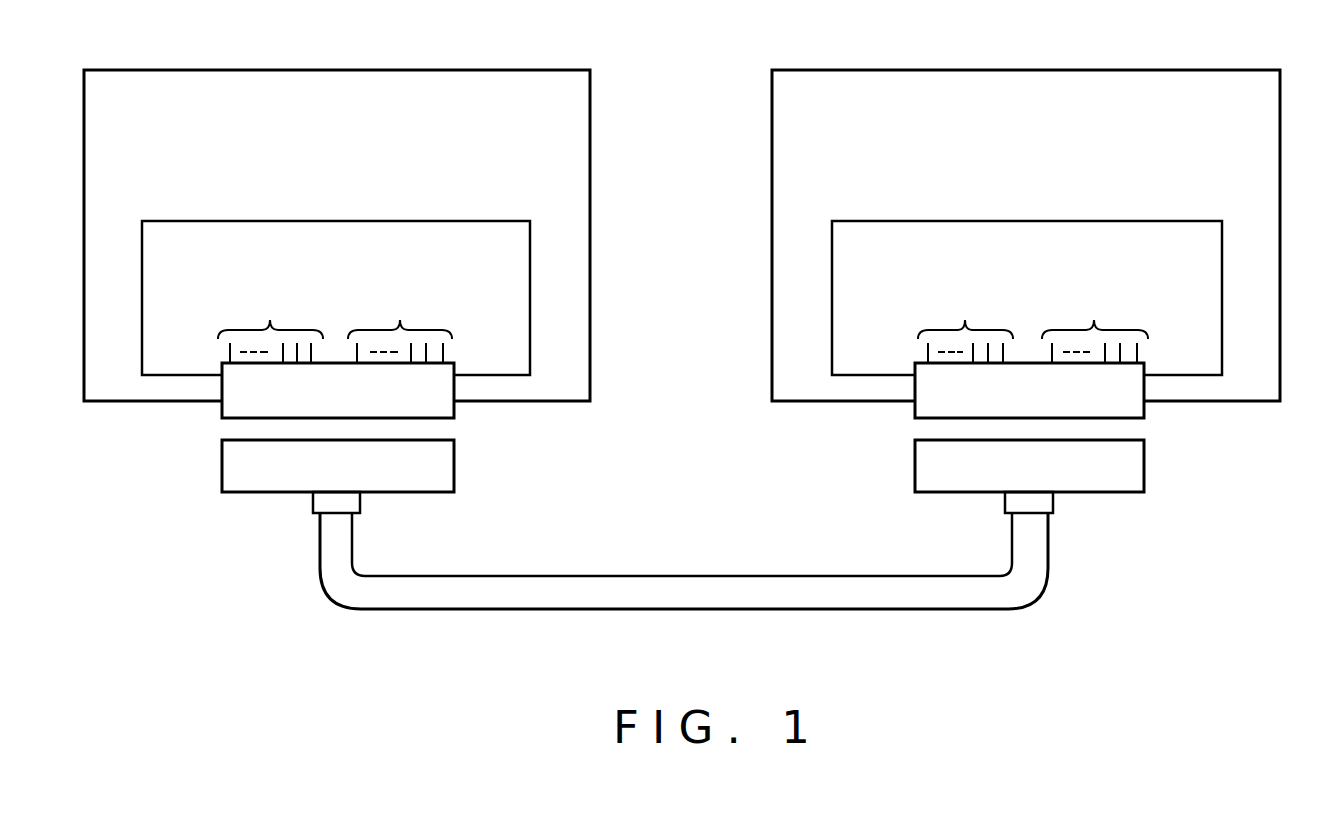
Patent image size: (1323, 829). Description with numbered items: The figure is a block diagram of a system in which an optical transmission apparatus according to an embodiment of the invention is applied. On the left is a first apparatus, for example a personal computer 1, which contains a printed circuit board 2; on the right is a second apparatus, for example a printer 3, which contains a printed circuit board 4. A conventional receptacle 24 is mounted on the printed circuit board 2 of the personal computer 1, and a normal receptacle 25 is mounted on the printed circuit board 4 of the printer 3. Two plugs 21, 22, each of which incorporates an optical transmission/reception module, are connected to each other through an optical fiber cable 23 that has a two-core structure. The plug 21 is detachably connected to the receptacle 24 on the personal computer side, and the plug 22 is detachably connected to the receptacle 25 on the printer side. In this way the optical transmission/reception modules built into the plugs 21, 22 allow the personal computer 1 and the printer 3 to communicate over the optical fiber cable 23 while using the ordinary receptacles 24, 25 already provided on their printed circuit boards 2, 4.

The personal computer 1 is at (226, 70).
The printed circuit board 2 is at (522, 258).
The printer 3 is at (855, 70).
The printed circuit board 4 is at (1215, 253).
The plug 21 is at (457, 468).
The plug 22 is at (1146, 468).
The optical fiber cable 23 is at (705, 575).
The receptacle 24 is at (457, 418).
The receptacle 25 is at (1146, 418).